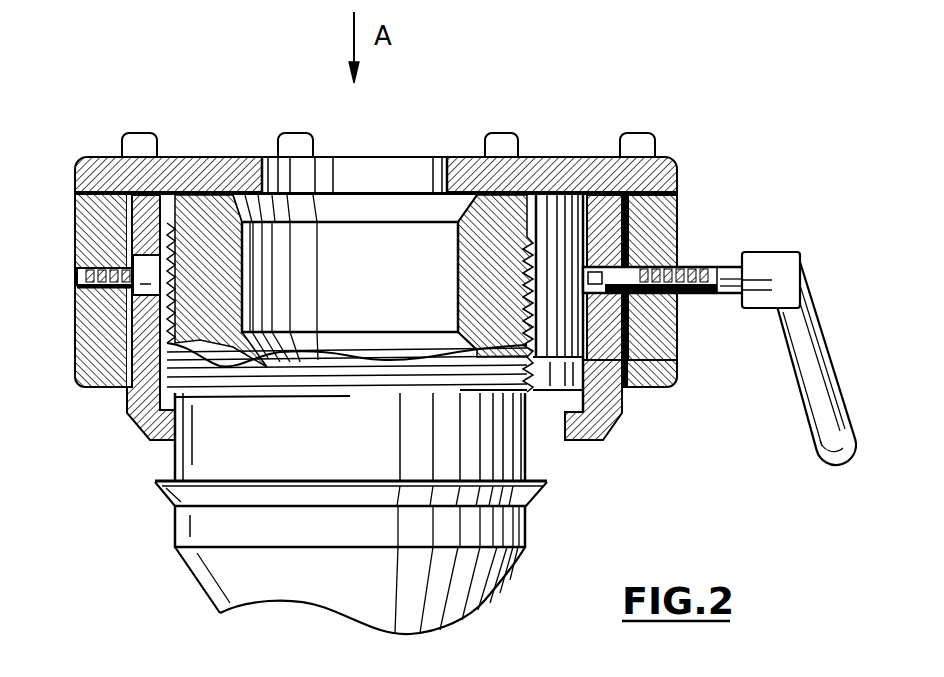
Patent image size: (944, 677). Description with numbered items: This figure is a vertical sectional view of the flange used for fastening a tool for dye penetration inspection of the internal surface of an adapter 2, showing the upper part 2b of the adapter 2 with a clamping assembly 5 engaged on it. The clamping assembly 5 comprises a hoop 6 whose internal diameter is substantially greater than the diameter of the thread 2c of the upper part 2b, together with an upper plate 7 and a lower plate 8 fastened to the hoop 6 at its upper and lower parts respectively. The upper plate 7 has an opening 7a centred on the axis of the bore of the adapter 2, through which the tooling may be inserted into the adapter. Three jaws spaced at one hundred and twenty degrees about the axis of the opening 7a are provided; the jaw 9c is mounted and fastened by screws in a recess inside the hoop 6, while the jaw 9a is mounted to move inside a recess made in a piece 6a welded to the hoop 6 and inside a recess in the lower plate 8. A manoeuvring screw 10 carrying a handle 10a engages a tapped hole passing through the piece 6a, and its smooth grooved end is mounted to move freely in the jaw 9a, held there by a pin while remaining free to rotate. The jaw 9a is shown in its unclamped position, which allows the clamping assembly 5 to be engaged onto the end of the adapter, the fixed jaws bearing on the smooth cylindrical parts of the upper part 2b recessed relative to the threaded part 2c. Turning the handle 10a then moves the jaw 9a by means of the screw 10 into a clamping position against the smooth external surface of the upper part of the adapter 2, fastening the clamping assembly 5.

The adapter 2 is at (477, 568).
The upper part of the adapter 2b is at (513, 437).
The thread of the upper part of the adapter 2c is at (527, 240).
The clamping assembly 5 is at (645, 413).
The hoop 6 is at (97, 214).
The piece attached to the hoop 6a is at (663, 320).
The upper plate 7 is at (640, 176).
The opening 7a is at (354, 175).
The lower plate 8 is at (660, 380).
The jaw 9a is at (600, 427).
The jaw 9c is at (135, 421).
The manoeuvring screw 10 is at (695, 266).
The handle 10a is at (822, 446).